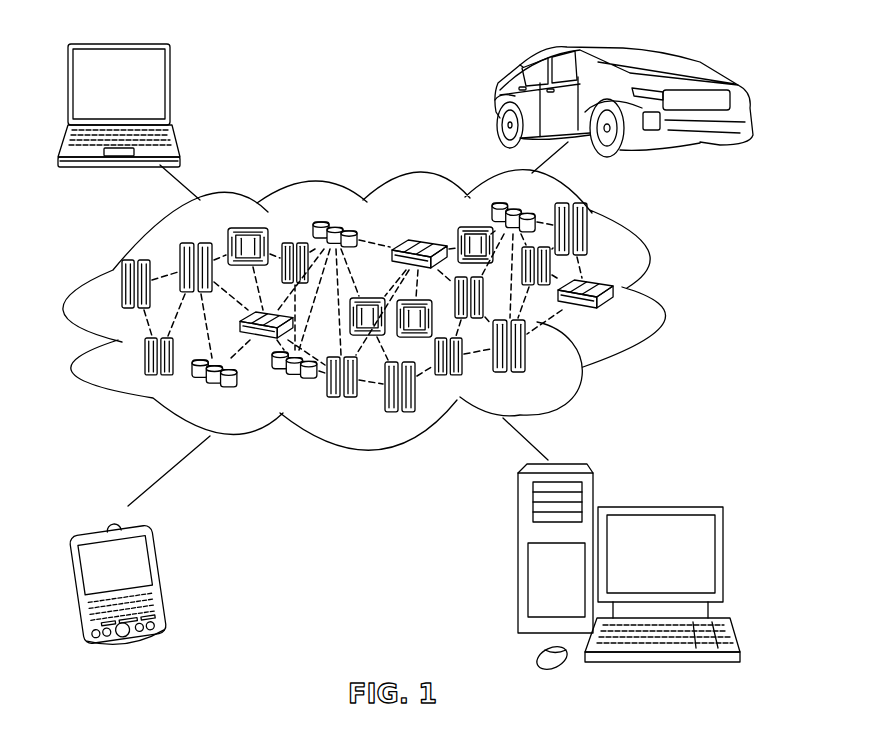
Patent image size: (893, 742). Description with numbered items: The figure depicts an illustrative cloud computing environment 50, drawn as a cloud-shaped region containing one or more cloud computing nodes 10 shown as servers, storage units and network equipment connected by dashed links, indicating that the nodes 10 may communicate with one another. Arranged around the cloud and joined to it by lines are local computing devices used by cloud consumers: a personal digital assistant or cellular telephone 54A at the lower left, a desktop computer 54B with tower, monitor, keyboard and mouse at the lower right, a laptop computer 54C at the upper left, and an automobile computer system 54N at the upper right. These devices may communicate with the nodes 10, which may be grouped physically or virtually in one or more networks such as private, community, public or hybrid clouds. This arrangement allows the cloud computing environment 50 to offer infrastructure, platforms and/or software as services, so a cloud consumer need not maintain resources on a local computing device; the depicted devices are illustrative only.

The cloud computing nodes 10 is at (624, 318).
The cloud computing environment 50 is at (657, 298).
The personal digital assistant or cellular telephone 54A is at (162, 575).
The desktop computer 54B is at (657, 507).
The laptop computer 54C is at (170, 92).
The automobile computer system 54N is at (498, 103).